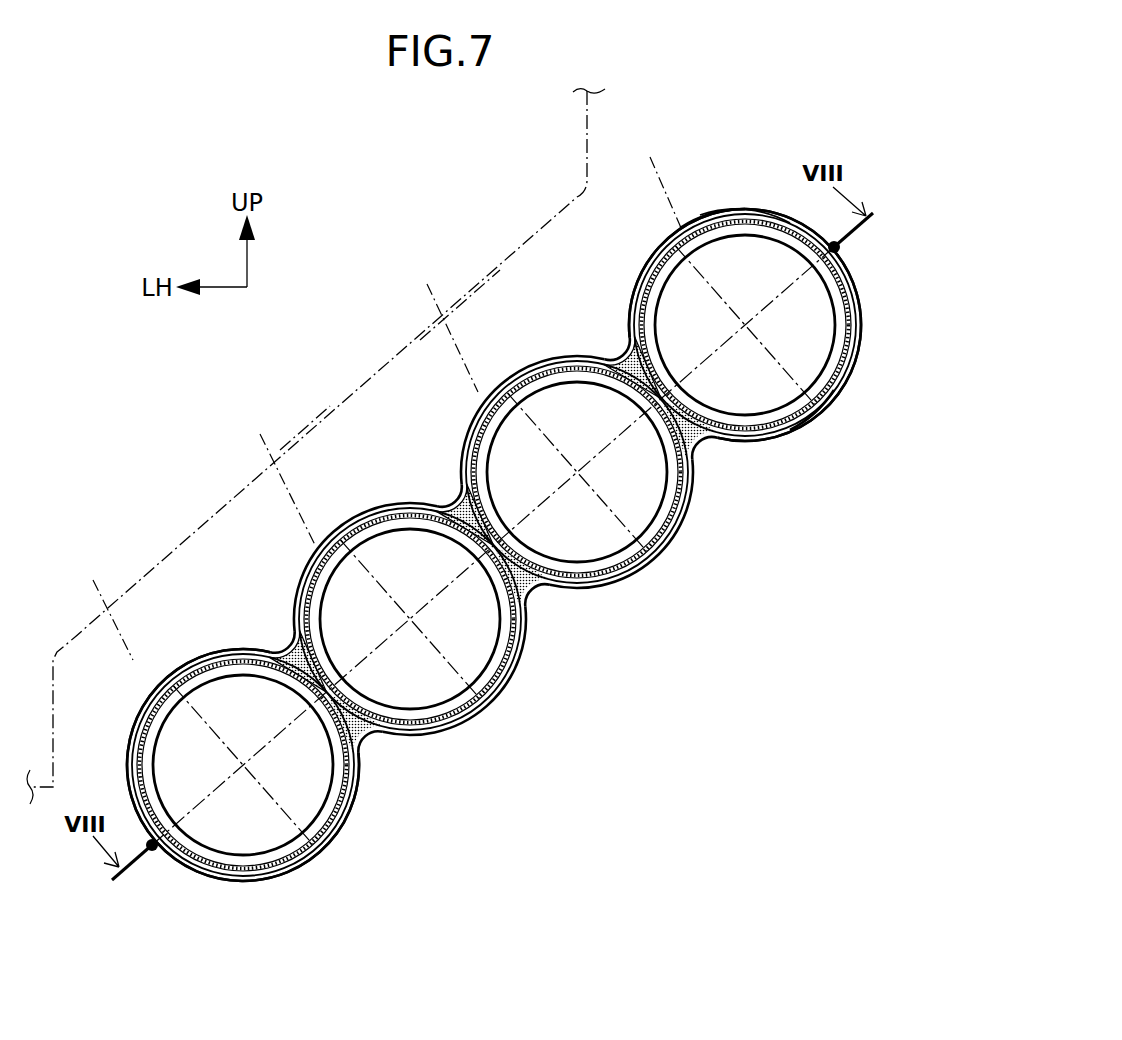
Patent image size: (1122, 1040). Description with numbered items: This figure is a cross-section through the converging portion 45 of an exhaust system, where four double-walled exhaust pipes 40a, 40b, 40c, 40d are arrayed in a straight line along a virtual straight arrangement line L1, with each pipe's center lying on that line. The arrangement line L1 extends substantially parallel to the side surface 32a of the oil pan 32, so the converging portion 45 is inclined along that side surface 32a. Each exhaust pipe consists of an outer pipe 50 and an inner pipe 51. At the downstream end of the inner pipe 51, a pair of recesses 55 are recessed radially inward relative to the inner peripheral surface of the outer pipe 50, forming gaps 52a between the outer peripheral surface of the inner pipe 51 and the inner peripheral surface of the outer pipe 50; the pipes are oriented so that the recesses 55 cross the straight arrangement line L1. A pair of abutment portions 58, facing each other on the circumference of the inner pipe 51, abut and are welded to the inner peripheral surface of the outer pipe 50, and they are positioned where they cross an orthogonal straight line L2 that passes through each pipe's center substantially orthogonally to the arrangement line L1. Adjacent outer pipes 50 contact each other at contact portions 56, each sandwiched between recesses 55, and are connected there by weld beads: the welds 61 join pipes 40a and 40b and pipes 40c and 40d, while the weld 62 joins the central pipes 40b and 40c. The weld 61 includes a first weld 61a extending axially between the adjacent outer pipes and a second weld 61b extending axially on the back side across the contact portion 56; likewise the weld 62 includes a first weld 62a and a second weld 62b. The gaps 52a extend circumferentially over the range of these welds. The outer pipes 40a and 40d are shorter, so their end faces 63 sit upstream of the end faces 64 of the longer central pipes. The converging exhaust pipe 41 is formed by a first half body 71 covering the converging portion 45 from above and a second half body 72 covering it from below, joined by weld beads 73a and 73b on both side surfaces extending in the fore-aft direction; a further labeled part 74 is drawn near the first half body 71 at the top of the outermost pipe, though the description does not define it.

The oil pan 32 is at (588, 123).
The side surface 32a is at (304, 430).
The exhaust pipe 40a is at (832, 455).
The exhaust pipe 40b is at (659, 585).
The exhaust pipe 40c is at (494, 753).
The exhaust pipe 40d is at (316, 876).
The converging exhaust pipe 41 is at (334, 841).
The converging portion 45 is at (500, 705).
The outer pipe 50 is at (688, 235).
The inner pipe 51 is at (668, 258).
The gap 52a is at (790, 242).
The recess 55 is at (845, 278).
The contact portion 56 is at (348, 823).
The abutment portion 58 is at (684, 222).
The weld 61 is at (618, 360).
The first weld 61a is at (603, 348).
The second weld 61b is at (705, 455).
The weld 62 is at (452, 500).
The first weld 62a is at (436, 494).
The second weld 62b is at (540, 590).
The end face 63 is at (860, 304).
The end face 64 is at (448, 740).
The first half body 71 is at (732, 211).
The second half body 72 is at (840, 418).
The weld bead 73a is at (843, 250).
The weld bead 73b is at (148, 852).
The upper wall portion 74 is at (712, 212).
The straight arrangement line L1 is at (470, 282).
The orthogonal straight line L2 is at (377, 394).